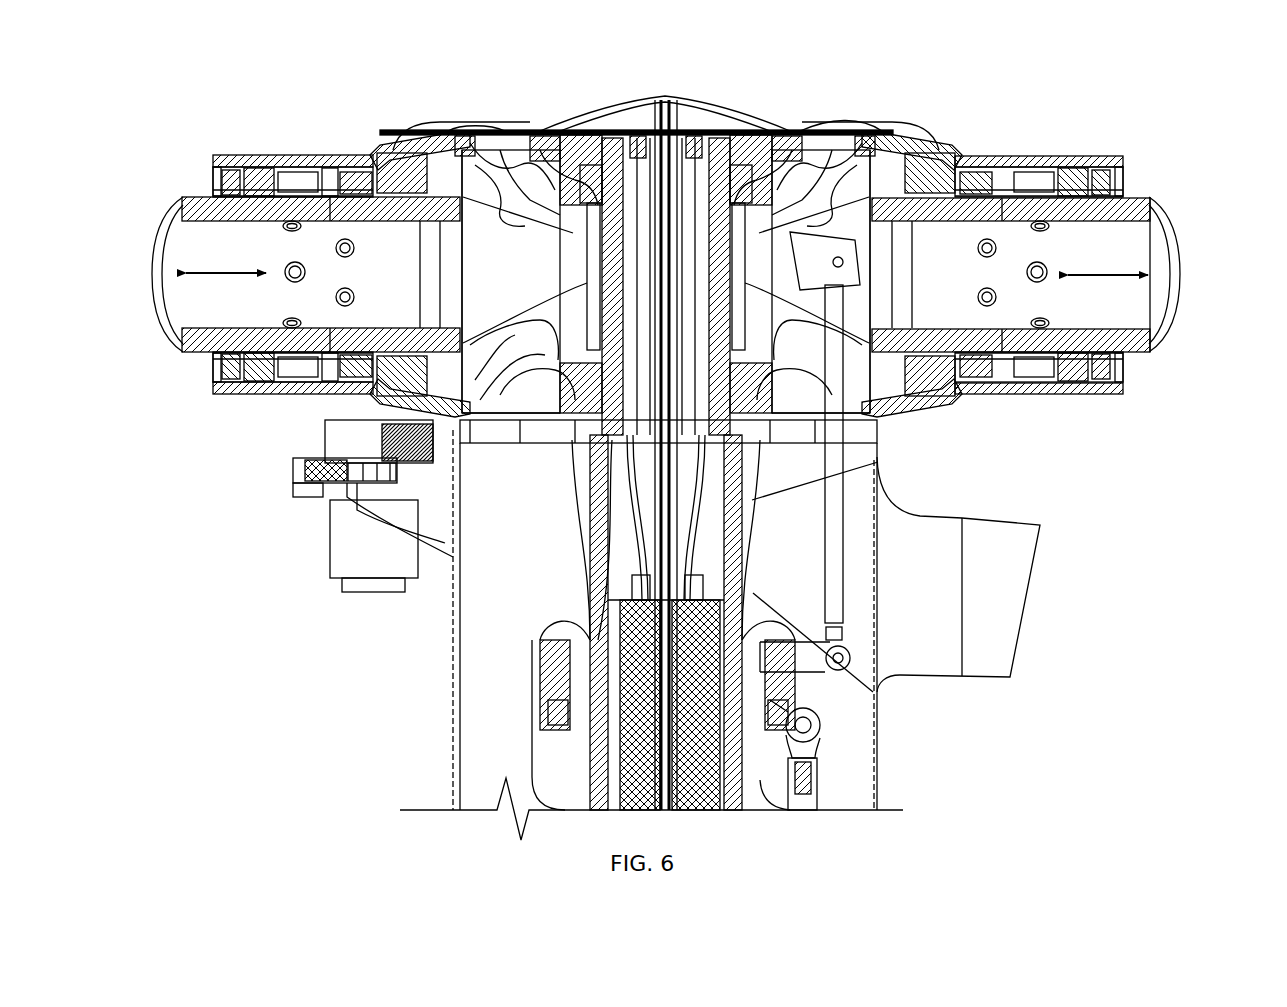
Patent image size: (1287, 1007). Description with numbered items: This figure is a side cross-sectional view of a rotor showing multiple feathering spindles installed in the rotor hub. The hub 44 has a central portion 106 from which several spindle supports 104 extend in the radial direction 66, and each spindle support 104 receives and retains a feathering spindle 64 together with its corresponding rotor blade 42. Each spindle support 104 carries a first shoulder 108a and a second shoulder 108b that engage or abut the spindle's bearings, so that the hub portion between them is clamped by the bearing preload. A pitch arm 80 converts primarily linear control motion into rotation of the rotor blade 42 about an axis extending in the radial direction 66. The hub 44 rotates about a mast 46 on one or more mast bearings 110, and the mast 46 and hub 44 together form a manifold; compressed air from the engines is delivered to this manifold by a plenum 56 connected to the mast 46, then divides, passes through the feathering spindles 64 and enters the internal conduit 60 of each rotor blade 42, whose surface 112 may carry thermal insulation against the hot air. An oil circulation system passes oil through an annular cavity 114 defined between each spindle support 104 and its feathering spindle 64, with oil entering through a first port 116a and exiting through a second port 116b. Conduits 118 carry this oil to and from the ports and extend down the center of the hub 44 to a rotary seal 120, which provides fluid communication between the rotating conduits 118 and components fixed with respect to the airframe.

The rotor blade 42 is at (1134, 196).
The hub 44 is at (1052, 80).
The mast 46 is at (455, 703).
The plenum 56 is at (1032, 520).
The internal conduit 60 is at (200, 248).
The feathering spindle 64 is at (205, 190).
The radial direction 66 is at (218, 274).
The pitch arm 80 is at (502, 257).
The spindle support 104 is at (232, 392).
The central portion 106 is at (718, 58).
The first shoulder 108a is at (285, 400).
The second shoulder 108b is at (274, 178).
The mast bearing 110 is at (583, 150).
The surface of the interior conduit 112 is at (192, 228).
The annular cavity 114 is at (320, 150).
The first port 116a is at (352, 180).
The second port 116b is at (290, 390).
The conduits 118 is at (432, 125).
The rotary seal 120 is at (712, 594).